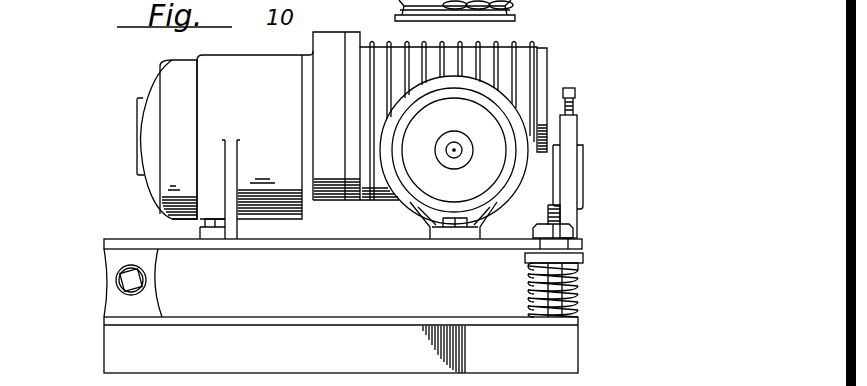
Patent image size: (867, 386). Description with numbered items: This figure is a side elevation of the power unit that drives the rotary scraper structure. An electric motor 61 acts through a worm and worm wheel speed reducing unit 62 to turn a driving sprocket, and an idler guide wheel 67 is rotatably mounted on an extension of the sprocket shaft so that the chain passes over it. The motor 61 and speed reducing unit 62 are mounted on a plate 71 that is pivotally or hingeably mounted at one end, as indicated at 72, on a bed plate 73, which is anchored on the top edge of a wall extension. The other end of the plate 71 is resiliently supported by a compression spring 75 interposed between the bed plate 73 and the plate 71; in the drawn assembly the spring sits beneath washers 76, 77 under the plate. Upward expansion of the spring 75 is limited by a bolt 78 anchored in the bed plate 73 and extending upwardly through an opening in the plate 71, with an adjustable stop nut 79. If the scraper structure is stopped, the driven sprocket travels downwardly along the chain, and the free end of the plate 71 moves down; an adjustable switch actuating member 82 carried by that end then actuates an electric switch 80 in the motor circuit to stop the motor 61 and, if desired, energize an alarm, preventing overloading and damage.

The electric motor 61 is at (232, 73).
The worm and worm wheel speed reducing unit 62 is at (467, 78).
The idler guide wheel 67 is at (508, 19).
The plate 71 is at (357, 245).
The pivotal mounting 72 is at (122, 270).
The bed plate 73 is at (268, 321).
The compression spring 75 is at (582, 281).
The washer 76 is at (584, 258).
The washer 77 is at (576, 248).
The bolt 78 is at (577, 217).
The adjustable stop nut 79 is at (572, 231).
The electric switch 80 is at (585, 168).
The adjustable switch actuating member 82 is at (570, 132).